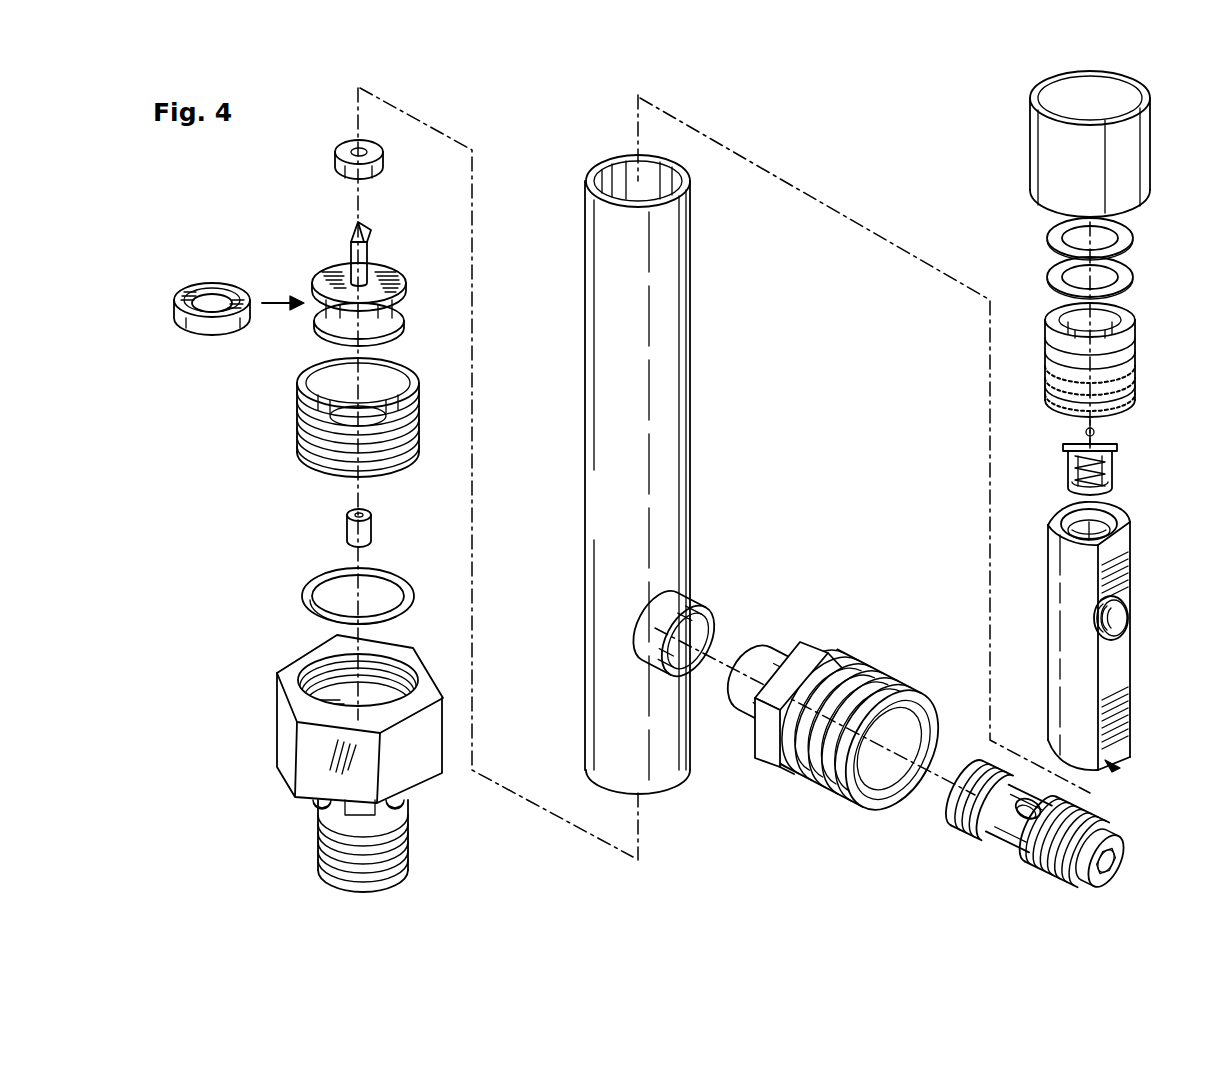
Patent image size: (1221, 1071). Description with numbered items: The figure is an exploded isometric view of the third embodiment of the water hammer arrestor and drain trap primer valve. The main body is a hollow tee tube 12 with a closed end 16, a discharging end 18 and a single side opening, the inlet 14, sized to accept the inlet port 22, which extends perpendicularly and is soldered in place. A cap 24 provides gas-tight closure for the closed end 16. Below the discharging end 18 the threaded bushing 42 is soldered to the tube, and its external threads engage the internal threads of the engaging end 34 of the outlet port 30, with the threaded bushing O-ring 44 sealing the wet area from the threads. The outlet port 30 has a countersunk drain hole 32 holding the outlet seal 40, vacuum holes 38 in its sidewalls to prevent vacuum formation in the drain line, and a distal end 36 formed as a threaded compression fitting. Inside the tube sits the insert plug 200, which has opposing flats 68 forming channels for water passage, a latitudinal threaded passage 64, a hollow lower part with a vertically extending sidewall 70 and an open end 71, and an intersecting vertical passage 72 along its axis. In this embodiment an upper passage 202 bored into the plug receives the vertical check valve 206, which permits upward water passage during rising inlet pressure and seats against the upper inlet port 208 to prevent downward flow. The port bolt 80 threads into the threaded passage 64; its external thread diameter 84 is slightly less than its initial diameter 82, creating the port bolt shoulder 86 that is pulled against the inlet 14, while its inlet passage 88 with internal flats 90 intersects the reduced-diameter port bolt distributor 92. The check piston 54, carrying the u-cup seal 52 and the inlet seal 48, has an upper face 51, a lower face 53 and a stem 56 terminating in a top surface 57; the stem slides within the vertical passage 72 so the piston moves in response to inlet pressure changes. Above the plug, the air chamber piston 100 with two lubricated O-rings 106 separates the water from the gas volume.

The tee tube 12 is at (634, 487).
The inlet 14 is at (692, 604).
The closed end 16 is at (590, 170).
The discharging end 18 is at (642, 792).
The inlet port 22 is at (828, 648).
The cap 24 is at (1143, 150).
The outlet port 30 is at (330, 756).
The drain hole 32 is at (378, 700).
The engaging end 34 is at (292, 665).
The distal end 36 is at (320, 882).
The vacuum holes 38 is at (318, 806).
The outlet seal 40 is at (347, 527).
The threaded bushing 42 is at (298, 420).
The threaded bushing O-ring 44 is at (303, 598).
The inlet seal 48 is at (349, 152).
The upper face 51 is at (387, 277).
The u-cup seal 52 is at (211, 284).
The lower face 53 is at (396, 333).
The check piston 54 is at (351, 276).
The stem 56 is at (367, 258).
The top surface 57 is at (352, 228).
The threaded passage 64 is at (1128, 612).
The flats 68 is at (1119, 635).
The vertically extending sidewall 70 is at (1160, 787).
The open end 71 is at (1160, 787).
The intersecting vertical passage 72 is at (1115, 772).
The port bolt 80 is at (1039, 831).
The initial diameter 82 is at (1086, 884).
The external thread diameter 84 is at (1035, 868).
The port bolt shoulder 86 is at (1068, 876).
The inlet passage 88 is at (1110, 868).
The internal flats 90 is at (1109, 860).
The port bolt distributor 92 is at (1027, 802).
The air chamber piston 100 is at (1136, 330).
The O-rings 106 is at (1132, 272).
The insert plug 200 is at (1119, 442).
The upper passage 202 is at (1103, 520).
The vertical check valve 206 is at (1113, 468).
The upper inlet port 208 is at (1098, 532).